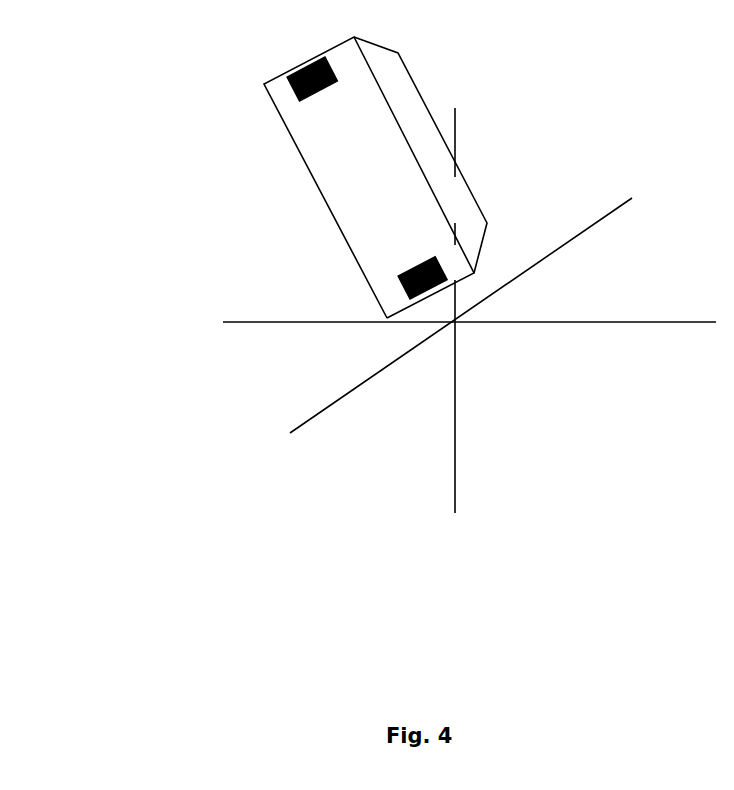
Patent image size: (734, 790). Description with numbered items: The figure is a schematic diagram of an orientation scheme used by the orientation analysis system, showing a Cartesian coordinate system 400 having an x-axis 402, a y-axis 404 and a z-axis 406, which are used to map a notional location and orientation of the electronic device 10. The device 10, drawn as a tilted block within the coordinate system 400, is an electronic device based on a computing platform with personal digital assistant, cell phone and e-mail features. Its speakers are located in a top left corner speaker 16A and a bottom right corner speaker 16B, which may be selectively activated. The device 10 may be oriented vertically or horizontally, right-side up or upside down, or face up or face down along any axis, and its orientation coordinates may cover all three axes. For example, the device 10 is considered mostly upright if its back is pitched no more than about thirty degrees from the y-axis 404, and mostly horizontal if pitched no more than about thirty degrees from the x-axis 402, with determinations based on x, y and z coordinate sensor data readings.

The electronic device 10 is at (410, 101).
The top left corner speaker 16A is at (276, 64).
The bottom right corner speaker 16B is at (385, 285).
The Cartesian coordinate system 400 is at (124, 143).
The x-axis 402 is at (427, 324).
The y-axis 404 is at (459, 332).
The z-axis 406 is at (439, 329).